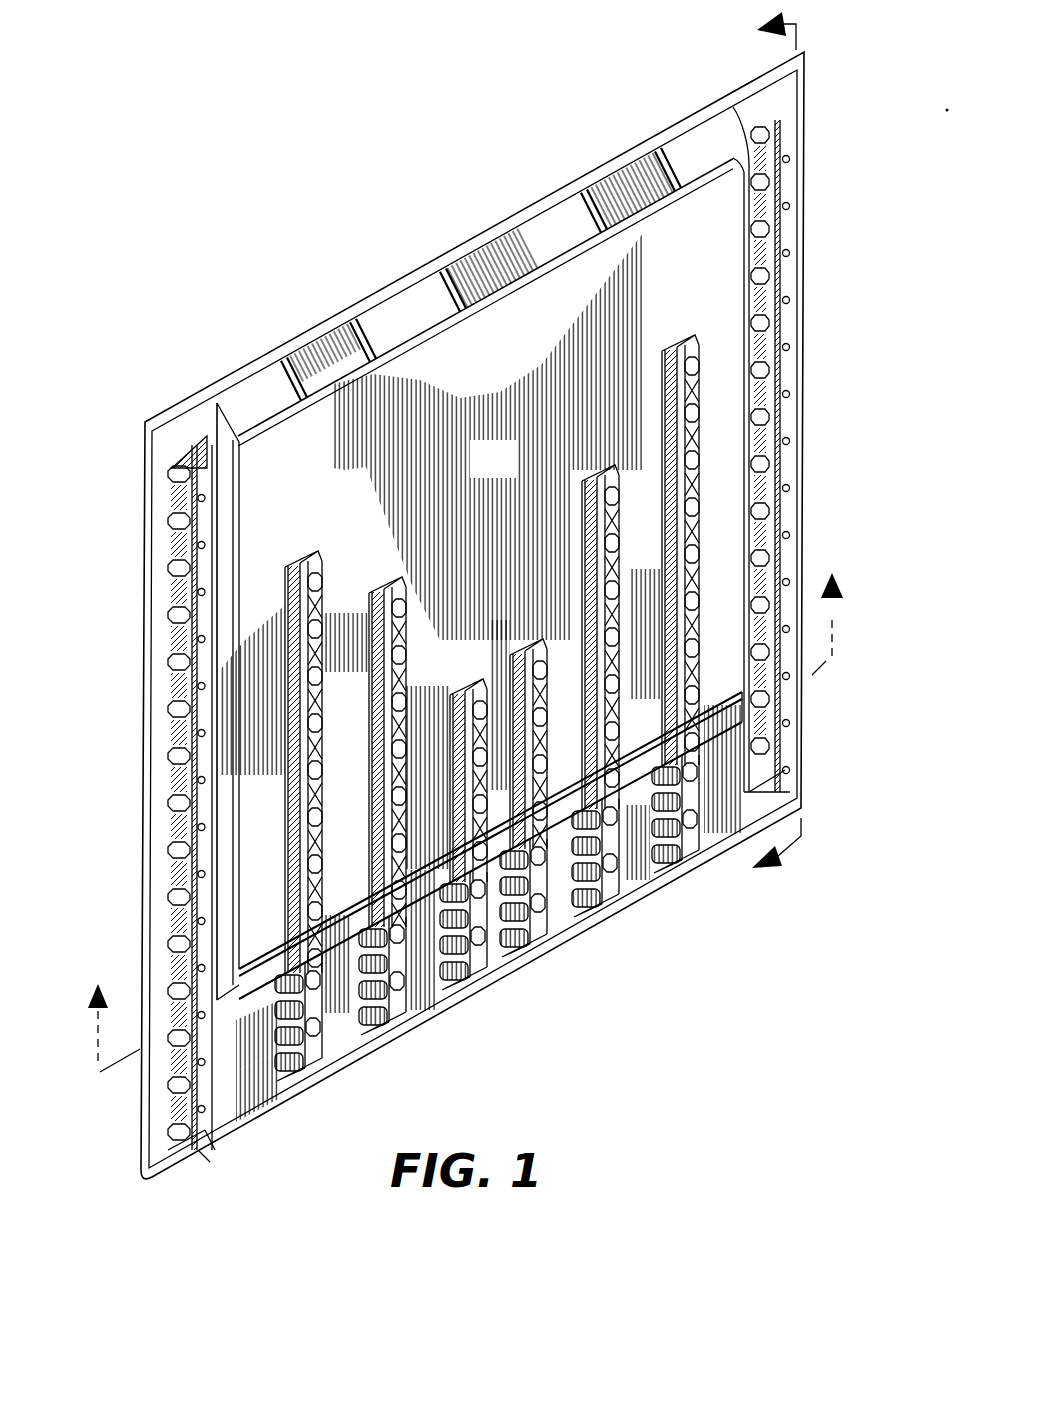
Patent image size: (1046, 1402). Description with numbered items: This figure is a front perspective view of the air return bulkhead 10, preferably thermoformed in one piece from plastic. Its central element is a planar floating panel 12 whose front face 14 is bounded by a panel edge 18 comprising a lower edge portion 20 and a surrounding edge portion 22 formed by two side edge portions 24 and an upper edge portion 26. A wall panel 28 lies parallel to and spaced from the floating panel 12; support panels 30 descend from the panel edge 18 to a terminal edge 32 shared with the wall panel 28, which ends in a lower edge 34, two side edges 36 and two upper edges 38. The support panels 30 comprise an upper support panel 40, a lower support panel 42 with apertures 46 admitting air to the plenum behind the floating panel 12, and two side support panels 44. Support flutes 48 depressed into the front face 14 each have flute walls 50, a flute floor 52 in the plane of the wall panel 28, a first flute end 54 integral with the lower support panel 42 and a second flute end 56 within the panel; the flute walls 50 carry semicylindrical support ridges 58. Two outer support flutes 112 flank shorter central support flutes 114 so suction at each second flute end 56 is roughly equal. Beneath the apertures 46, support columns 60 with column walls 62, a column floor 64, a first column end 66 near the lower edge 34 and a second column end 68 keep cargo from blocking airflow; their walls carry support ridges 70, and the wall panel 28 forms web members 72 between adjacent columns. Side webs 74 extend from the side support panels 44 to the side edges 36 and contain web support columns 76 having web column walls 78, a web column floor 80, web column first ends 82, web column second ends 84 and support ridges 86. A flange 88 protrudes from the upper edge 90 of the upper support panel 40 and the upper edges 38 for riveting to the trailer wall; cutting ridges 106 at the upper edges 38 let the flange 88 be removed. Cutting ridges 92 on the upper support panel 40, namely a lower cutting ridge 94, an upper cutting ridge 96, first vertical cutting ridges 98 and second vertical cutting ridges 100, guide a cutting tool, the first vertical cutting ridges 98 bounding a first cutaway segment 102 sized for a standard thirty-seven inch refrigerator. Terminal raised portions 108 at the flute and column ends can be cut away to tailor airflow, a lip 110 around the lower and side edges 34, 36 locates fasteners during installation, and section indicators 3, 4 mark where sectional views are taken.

The air return bulkhead 10 is at (170, 240).
The floating panel 12 is at (505, 471).
The front face 14 is at (249, 814).
The panel edge 18 is at (227, 858).
The lower edge portion 20 is at (263, 902).
The surrounding edge portion 22 is at (215, 972).
The side edge portions 24 is at (143, 1044).
The upper edge portion 26 is at (351, 308).
The wall panel 28 is at (293, 1102).
The support panels 30 is at (424, 271).
The terminal edge 32 is at (472, 241).
The lower edge 34 is at (290, 1100).
The side edges 36 is at (146, 468).
The upper edges 38 is at (157, 482).
The upper support panel 40 is at (528, 225).
The lower support panel 42 is at (343, 1067).
The side support panels 44 is at (234, 518).
The apertures 46 is at (410, 1034).
The support flutes 48 is at (289, 588).
The flute walls 50 is at (289, 635).
The flute floor 52 is at (307, 675).
The first flute end 54 is at (179, 719).
The second flute end 56 is at (183, 679).
The support ridges 58 is at (278, 778).
The support columns 60 is at (580, 933).
The column walls 62 is at (617, 940).
The column floor 64 is at (630, 840).
The first column end 66 is at (640, 905).
The second column end 68 is at (700, 845).
The support ridges 70 is at (550, 947).
The web members 72 is at (500, 940).
The side webs 74 is at (801, 296).
The web support columns 76 is at (786, 348).
The web column walls 78 is at (772, 396).
The web column floor 80 is at (786, 440).
The web column first ends 82 is at (757, 790).
The web column second ends 84 is at (797, 118).
The support ridges 86 is at (772, 468).
The flange 88 is at (578, 165).
The upper edge 90 is at (633, 162).
The cutting ridges 92 is at (596, 205).
The lower cutting ridge 94 is at (662, 160).
The upper cutting ridge 96 is at (695, 130).
The first vertical cutting ridges 98 is at (372, 345).
The second vertical cutting ridges 100 is at (292, 390).
The first cutaway segment 102 is at (457, 319).
The cutting ridges 106 is at (178, 416).
The terminal raised portions 108 is at (190, 446).
The lip 110 is at (205, 1150).
The outer support flutes 112 is at (315, 552).
The central support flutes 114 is at (545, 642).
The section line 3 is at (464, 844).
The section line 4 is at (793, 434).